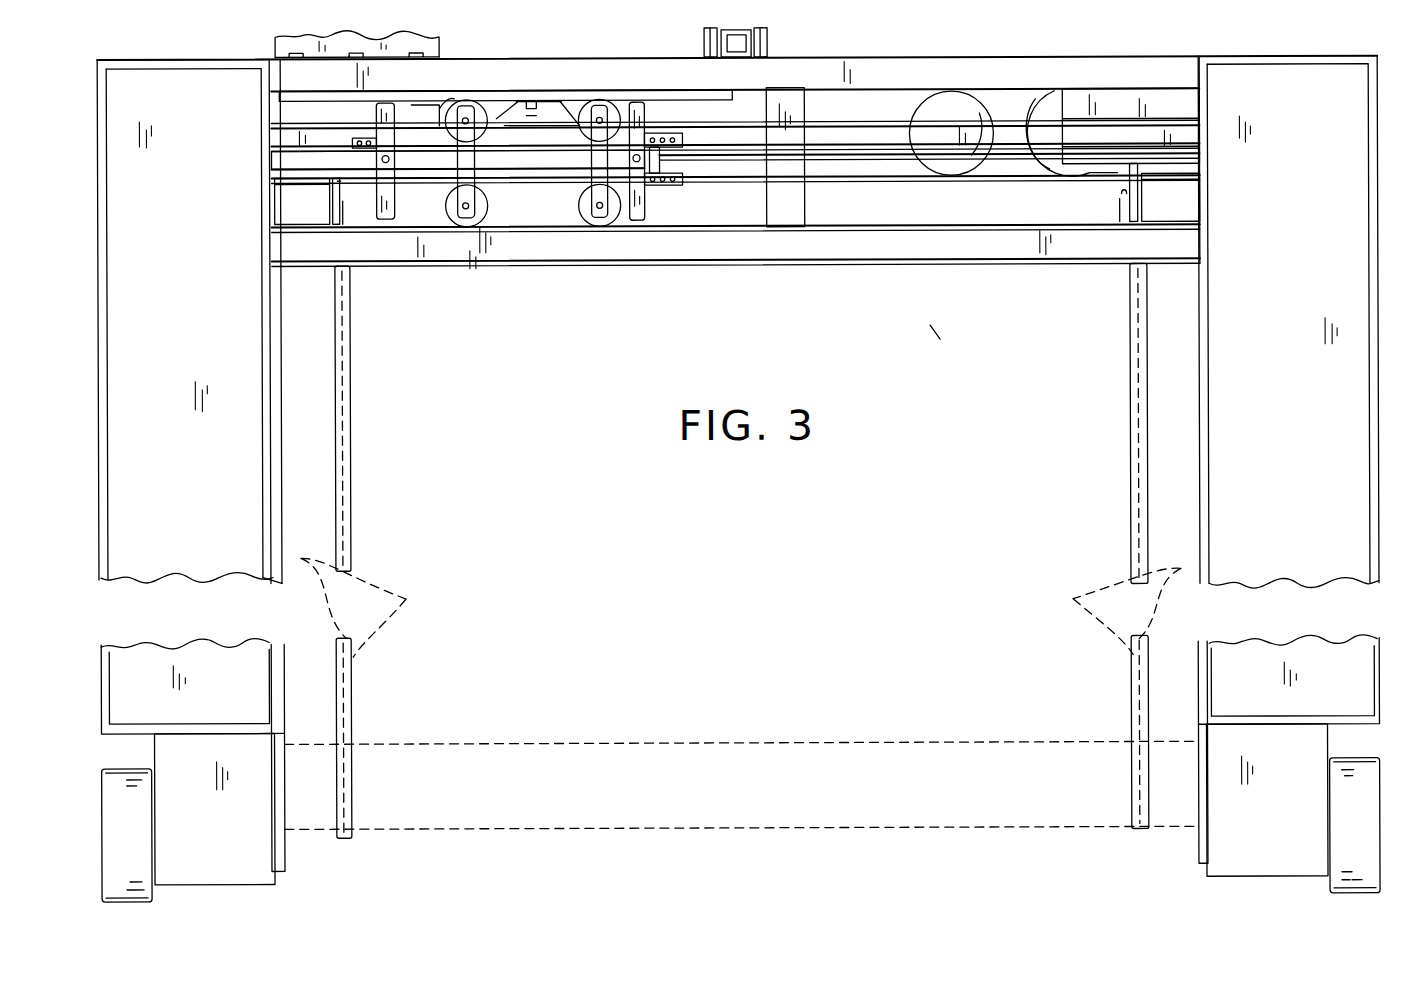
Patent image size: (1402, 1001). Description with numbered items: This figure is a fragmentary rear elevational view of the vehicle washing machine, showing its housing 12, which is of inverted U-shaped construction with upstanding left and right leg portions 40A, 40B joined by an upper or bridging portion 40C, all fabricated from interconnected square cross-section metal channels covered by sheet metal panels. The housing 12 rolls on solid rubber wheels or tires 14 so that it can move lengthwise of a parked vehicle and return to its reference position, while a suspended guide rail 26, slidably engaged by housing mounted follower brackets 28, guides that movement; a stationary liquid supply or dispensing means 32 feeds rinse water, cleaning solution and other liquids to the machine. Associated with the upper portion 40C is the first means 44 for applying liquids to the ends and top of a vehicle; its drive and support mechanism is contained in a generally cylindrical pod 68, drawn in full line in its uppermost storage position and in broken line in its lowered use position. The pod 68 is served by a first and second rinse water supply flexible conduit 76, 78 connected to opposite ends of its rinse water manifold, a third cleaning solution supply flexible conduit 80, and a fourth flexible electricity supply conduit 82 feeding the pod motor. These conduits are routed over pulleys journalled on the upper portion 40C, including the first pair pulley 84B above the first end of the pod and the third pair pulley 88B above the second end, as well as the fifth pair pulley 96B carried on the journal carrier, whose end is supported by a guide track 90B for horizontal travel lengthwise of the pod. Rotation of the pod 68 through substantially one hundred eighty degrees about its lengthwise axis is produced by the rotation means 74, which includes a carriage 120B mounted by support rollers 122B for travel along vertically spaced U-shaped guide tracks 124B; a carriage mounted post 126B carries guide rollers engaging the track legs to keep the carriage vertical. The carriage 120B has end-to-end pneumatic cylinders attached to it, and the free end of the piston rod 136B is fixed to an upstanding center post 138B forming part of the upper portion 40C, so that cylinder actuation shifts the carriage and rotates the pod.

The housing 12 is at (178, 56).
The solid rubber wheels or tires 14 is at (96, 858).
The guide rail 26 is at (738, 27).
The follower brackets 28 is at (706, 47).
The stationary liquid supply or dispensing means 32 is at (450, 43).
The left leg portion 40A is at (1331, 100).
The right leg portion 40B is at (124, 196).
The upper or bridging portion 40C is at (1040, 55).
The first means 44 is at (908, 320).
The pod 68 is at (845, 167).
The rotation means 74 is at (513, 208).
The first rinse water supply flexible conduit 76 is at (1130, 656).
The second rinse water supply flexible conduit 78 is at (352, 656).
The third cleaning solution supply flexible conduit 80 is at (1180, 570).
The fourth flexible electricity supply conduit 82 is at (300, 557).
The first pair rotatable pulley 84B is at (1098, 174).
The third pair rotatable pulley 88B is at (378, 222).
The guide track 90B is at (1028, 135).
The fifth pair rotatable pulley 96B is at (687, 115).
The carriage 120B is at (530, 162).
The support rollers 122B is at (446, 196).
The U-shaped guide tracks 124B is at (743, 200).
The carriage mounted post 126B is at (378, 114).
The piston rod 136B is at (698, 190).
The upstanding center post 138B is at (783, 210).